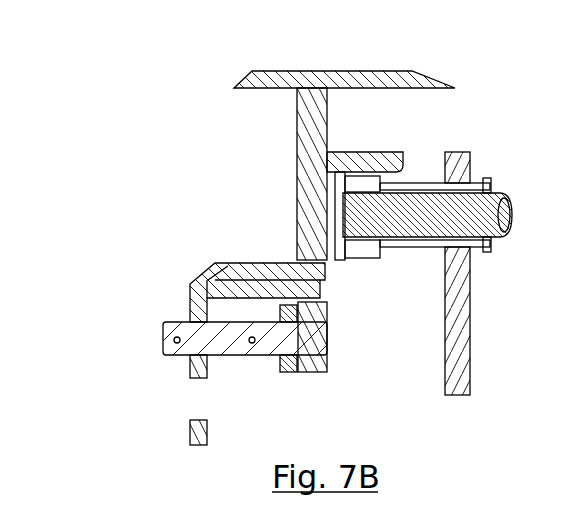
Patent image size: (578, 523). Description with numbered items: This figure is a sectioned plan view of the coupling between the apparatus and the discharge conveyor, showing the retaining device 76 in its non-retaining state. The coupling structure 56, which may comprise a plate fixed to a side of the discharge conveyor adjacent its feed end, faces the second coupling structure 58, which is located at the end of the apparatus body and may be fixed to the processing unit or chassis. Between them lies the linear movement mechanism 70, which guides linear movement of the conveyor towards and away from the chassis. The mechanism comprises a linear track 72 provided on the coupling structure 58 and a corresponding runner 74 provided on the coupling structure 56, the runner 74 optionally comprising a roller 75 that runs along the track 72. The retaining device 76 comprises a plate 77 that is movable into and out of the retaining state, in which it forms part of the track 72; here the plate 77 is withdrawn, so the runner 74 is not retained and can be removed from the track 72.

The coupling structure 56 is at (466, 305).
The second coupling structure 58 is at (305, 110).
The linear movement mechanism 70 is at (325, 193).
The linear track 72 is at (392, 166).
The runner 74 is at (343, 216).
The roller 75 is at (363, 258).
The retaining device 76 is at (215, 265).
The plate 77 is at (260, 285).